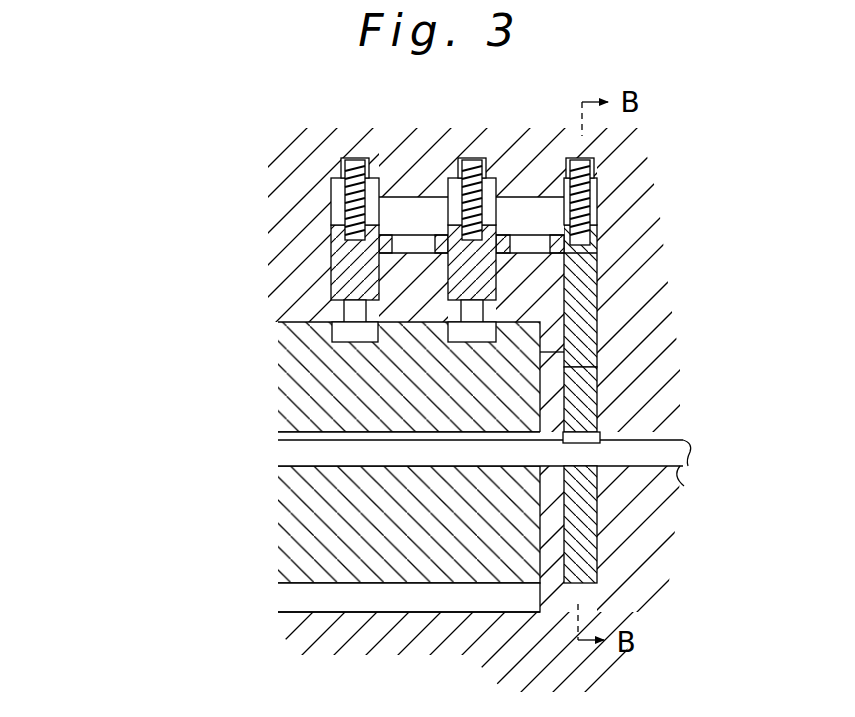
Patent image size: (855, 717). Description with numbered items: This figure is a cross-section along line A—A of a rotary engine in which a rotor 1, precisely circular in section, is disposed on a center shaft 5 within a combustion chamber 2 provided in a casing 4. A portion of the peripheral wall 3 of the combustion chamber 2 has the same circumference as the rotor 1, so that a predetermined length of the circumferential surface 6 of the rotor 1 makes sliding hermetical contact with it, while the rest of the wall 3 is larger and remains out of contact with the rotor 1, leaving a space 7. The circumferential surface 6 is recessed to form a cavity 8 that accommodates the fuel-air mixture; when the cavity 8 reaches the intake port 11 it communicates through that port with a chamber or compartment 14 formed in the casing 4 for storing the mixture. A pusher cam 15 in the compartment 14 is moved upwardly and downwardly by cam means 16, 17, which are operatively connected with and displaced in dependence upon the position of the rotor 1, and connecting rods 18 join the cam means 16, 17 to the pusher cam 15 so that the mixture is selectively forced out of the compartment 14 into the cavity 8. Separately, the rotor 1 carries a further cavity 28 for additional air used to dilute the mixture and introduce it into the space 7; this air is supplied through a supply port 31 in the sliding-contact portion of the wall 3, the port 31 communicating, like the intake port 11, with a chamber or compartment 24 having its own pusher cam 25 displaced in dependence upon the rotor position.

The rotor 1 is at (325, 523).
The combustion chamber 2 is at (545, 352).
The peripheral wall 3 is at (450, 605).
The casing 4 is at (600, 262).
The center shaft 5 is at (686, 476).
The circumferential surface 6 is at (600, 302).
The space 7 is at (325, 600).
The cavity 8 is at (335, 332).
The intake port 11 is at (345, 308).
The chamber or compartment 14 is at (335, 268).
The pusher cam 15 is at (335, 253).
The cam means 16 is at (585, 412).
The cam means 17 is at (587, 323).
The connecting rods 18 is at (526, 237).
The chamber or compartment 24 is at (450, 290).
The pusher cam 25 is at (452, 262).
The further cavity 28 is at (467, 343).
The supply port 31 is at (456, 305).